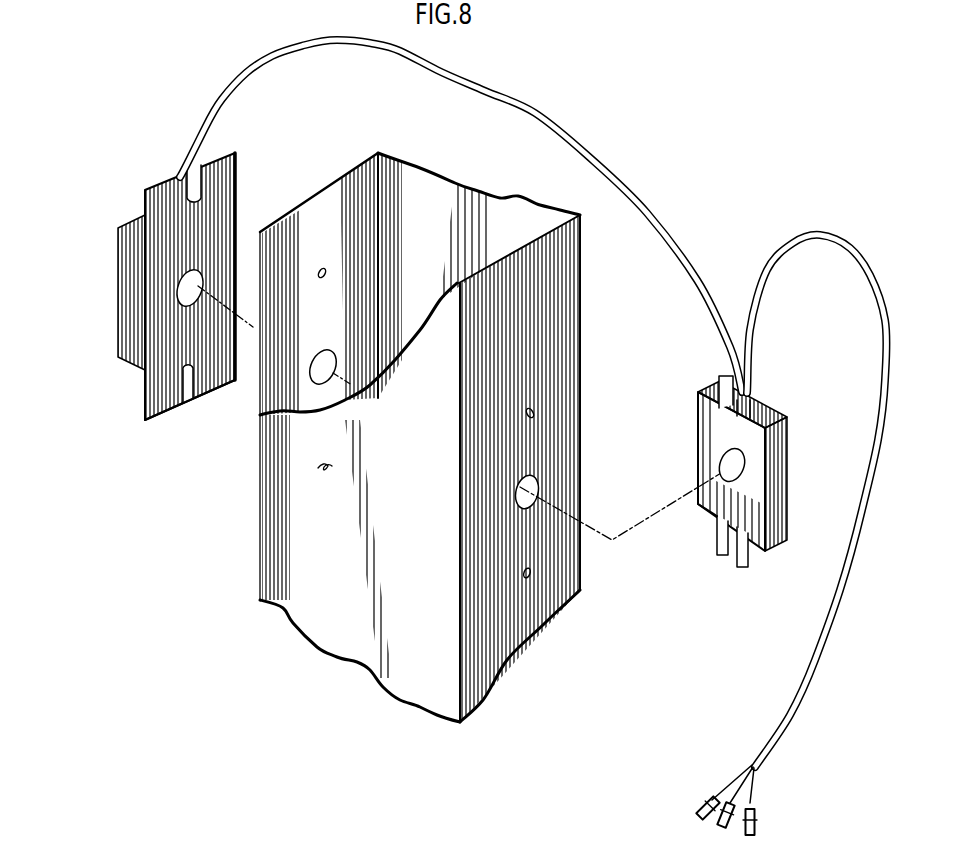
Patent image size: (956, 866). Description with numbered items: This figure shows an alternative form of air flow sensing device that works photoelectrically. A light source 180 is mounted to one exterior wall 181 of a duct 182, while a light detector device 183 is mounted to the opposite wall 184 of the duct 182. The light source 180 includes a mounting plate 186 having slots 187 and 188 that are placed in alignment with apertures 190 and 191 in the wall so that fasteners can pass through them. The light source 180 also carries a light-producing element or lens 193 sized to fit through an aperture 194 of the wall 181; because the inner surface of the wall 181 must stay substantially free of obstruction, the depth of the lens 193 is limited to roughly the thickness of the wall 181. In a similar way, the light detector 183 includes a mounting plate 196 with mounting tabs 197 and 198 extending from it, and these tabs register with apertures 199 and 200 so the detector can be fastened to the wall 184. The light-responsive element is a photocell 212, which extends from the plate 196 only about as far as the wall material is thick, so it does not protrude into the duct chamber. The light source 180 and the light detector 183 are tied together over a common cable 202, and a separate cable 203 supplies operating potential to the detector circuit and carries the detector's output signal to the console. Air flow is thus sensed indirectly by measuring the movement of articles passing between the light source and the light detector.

The light source 180 is at (122, 322).
The exterior wall 181 is at (312, 200).
The duct 182 is at (293, 571).
The light detector device 183 is at (779, 428).
The opposite wall 184 is at (528, 622).
The mounting plate 186 is at (146, 421).
The slot 187 is at (186, 400).
The slot 188 is at (194, 192).
The aperture 190 is at (332, 462).
The aperture 191 is at (322, 268).
The light-producing element or lens 193 is at (186, 307).
The aperture 194 is at (328, 352).
The mounting plate 196 is at (715, 498).
The mounting tab 197 is at (718, 553).
The mounting tab 198 is at (718, 392).
The aperture 199 is at (535, 573).
The aperture 200 is at (533, 408).
The common cable 202 is at (548, 108).
The cable 203 is at (808, 630).
The photocell 212 is at (720, 462).